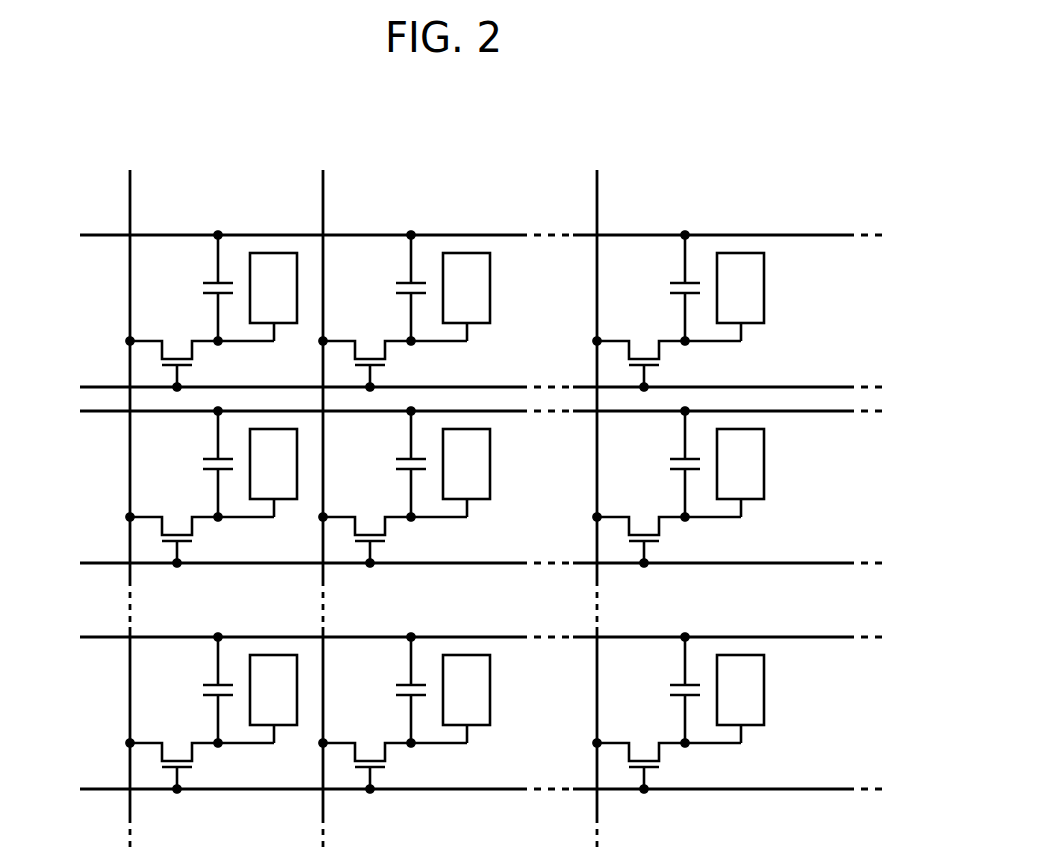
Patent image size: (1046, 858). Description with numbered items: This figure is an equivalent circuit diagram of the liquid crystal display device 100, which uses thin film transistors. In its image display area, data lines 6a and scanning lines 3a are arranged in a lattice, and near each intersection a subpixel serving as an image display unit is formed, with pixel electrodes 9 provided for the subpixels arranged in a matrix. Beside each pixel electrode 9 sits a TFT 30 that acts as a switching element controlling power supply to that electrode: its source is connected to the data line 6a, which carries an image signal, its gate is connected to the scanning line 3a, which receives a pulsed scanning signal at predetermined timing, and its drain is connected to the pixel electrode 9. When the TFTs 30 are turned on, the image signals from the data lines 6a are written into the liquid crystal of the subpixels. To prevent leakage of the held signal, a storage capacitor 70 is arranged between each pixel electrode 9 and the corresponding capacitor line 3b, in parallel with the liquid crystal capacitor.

The liquid crystal display device 100 is at (774, 129).
The data line 6a is at (130, 218).
The scanning line 3a is at (98, 387).
The capacitor line 3b is at (92, 235).
The storage capacitor 70 is at (192, 285).
The pixel electrode 9 is at (290, 312).
The TFT 30 is at (214, 368).